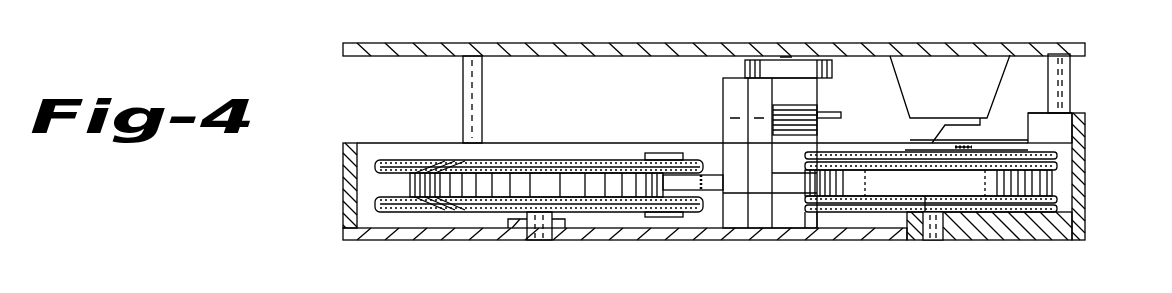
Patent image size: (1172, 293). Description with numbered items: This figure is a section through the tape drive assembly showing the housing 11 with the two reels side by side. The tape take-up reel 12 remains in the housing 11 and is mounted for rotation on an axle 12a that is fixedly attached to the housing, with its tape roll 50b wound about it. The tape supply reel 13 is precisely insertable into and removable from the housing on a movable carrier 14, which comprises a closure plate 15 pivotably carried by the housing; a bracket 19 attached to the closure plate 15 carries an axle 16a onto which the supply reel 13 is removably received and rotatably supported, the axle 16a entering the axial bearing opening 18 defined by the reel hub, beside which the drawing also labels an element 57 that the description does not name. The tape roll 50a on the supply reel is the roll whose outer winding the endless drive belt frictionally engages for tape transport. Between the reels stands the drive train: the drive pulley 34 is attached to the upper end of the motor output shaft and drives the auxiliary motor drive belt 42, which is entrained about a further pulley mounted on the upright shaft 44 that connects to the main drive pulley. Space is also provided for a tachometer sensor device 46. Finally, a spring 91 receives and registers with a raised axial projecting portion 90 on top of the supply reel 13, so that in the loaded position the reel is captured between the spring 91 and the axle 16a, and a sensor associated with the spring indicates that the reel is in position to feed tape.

The housing 11 is at (343, 183).
The tape take-up reel 12 is at (538, 160).
The axle 12a is at (535, 242).
The tape supply reel 13 is at (1060, 155).
The movable carrier 14 is at (1086, 218).
The closure plate 15 is at (1086, 185).
The axle 16a is at (930, 242).
The axial bearing opening 18 is at (915, 190).
The bracket 19 is at (980, 228).
The drive pulley 34 is at (773, 66).
The auxiliary motor drive belt 42 is at (833, 70).
The upright shaft 44 is at (791, 58).
The tachometer sensor device 46 is at (833, 113).
The tape roll 50a is at (1052, 178).
The tape roll 50b is at (410, 187).
The hub pin 57 is at (938, 189).
The raised axial projecting portion 90 is at (905, 146).
The spring 91 is at (926, 135).